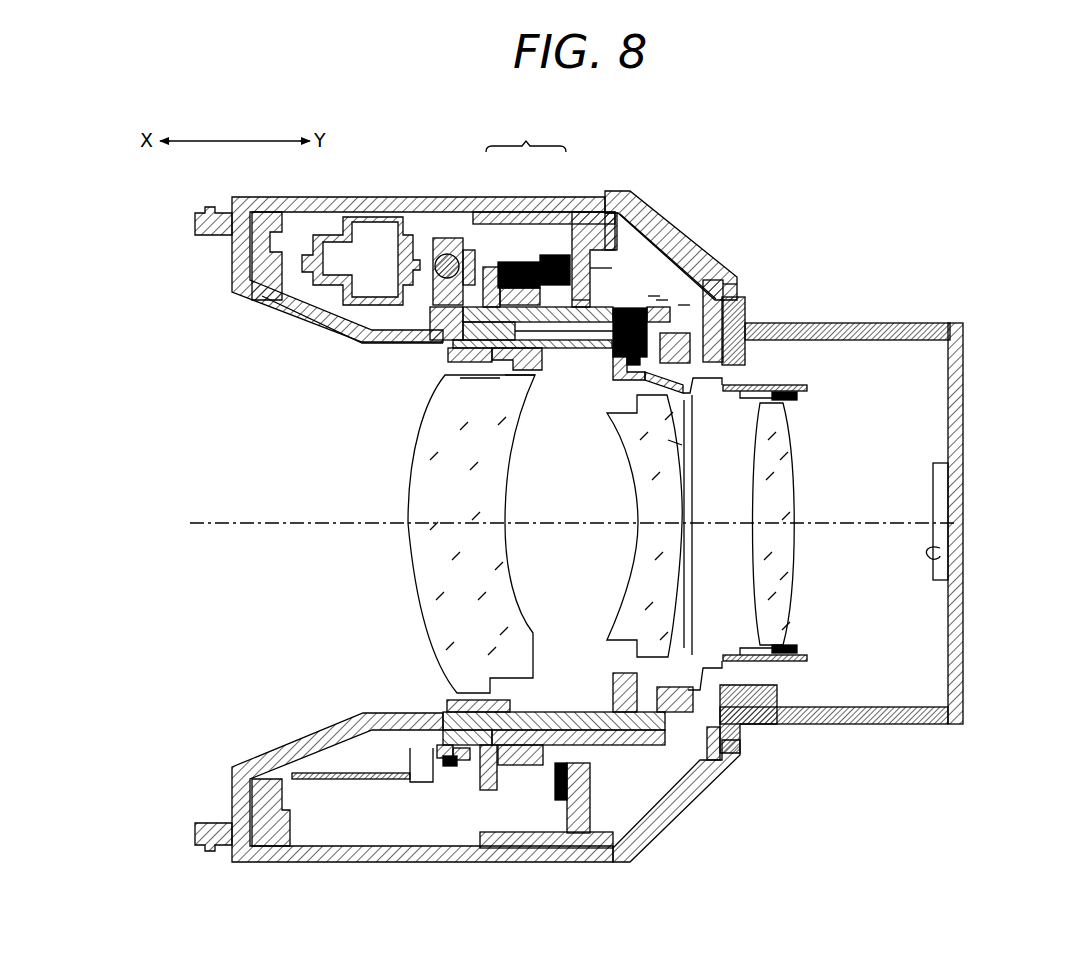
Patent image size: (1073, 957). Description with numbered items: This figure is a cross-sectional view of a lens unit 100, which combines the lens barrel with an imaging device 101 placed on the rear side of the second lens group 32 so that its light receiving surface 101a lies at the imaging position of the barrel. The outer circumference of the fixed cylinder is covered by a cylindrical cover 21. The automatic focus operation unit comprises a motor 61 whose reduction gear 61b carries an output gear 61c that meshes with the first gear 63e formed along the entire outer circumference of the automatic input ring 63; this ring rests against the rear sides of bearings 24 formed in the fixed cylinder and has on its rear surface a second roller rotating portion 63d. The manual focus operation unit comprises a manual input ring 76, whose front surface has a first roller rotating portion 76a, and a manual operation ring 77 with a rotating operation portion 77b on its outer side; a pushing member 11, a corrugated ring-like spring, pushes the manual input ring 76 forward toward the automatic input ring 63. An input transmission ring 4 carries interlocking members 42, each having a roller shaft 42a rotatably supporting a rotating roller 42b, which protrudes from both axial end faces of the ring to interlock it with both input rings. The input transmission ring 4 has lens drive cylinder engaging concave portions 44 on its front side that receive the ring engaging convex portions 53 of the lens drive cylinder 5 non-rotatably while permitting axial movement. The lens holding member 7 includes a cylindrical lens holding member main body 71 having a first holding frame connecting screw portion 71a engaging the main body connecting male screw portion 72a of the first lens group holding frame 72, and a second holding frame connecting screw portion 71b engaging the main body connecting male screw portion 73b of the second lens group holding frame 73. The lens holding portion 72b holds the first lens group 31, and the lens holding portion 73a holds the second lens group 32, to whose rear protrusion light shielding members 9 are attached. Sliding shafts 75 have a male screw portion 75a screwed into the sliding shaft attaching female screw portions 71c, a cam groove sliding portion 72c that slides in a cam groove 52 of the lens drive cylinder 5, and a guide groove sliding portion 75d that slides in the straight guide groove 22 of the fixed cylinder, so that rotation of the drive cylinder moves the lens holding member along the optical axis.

The lens unit 100 is at (802, 172).
The imaging device 101 is at (940, 500).
The light receiving surface 101a is at (930, 556).
The cover 21 is at (400, 196).
The straight guide groove 22 is at (562, 335).
The bearings 24 is at (450, 764).
The first lens group 31 is at (430, 497).
The second lens group 32 is at (777, 500).
The input transmission ring 4 is at (598, 272).
The lens drive cylinder 5 is at (660, 302).
The lens holding member 7 is at (606, 352).
The light shielding members 9 is at (790, 400).
The pushing member 11 is at (650, 298).
The interlocking members 42 is at (544, 172).
The roller shaft 42a is at (518, 262).
The rotating roller 42b is at (548, 256).
The lens drive cylinder engaging concave portions 44 is at (478, 375).
The cam grooves 52 is at (682, 306).
The ring engaging convex portions 53 is at (488, 380).
The motor 61 is at (372, 234).
The reduction gear 61b is at (440, 250).
The output gear 61c is at (448, 236).
The automatic input ring 63 is at (462, 368).
The second roller rotating portion 63d is at (490, 267).
The first gear 63e is at (447, 348).
The lens holding member main body 71 is at (598, 322).
The first holding frame connecting screw portion 71a is at (540, 372).
The second holding frame connecting screw portion 71b is at (742, 380).
The sliding shaft attaching female screw portions 71c is at (730, 305).
The first lens group holding frame 72 is at (524, 390).
The main body connecting male screw portion 72a is at (578, 305).
The lens holding portion 72b is at (468, 370).
The cam groove sliding portion 72c is at (668, 318).
The second lens group holding frame 73 is at (640, 415).
The lens holding portion 73a is at (682, 445).
The main body connecting male screw portion 73b is at (720, 360).
The sliding shafts 75 is at (640, 310).
The male screw portion 75a is at (722, 292).
The guide groove sliding portion 75d is at (735, 278).
The manual input ring 76 is at (580, 212).
The first roller rotating portion 76a is at (618, 262).
The manual operation ring 77 is at (612, 192).
The rotating operation portion 77b is at (610, 212).